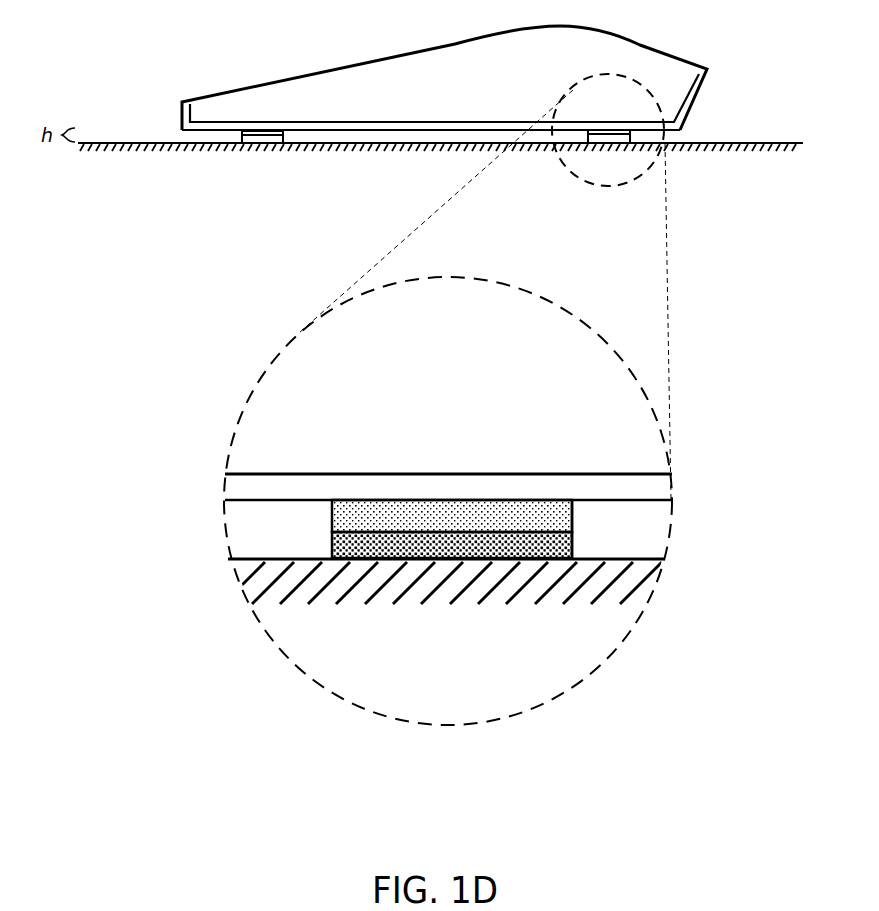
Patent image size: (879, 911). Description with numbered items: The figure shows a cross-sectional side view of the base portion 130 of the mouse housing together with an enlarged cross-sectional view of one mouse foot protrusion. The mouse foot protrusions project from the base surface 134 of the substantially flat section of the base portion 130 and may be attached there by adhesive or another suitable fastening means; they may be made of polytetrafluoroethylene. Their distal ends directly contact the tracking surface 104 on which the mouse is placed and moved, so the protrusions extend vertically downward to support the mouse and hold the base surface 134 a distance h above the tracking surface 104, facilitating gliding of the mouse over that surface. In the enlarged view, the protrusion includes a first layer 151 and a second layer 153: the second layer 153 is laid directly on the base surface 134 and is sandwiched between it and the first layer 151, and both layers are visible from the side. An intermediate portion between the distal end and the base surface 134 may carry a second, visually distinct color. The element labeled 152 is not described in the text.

The tracking surface 104 is at (730, 143).
The base portion 130 is at (460, 124).
The base surface 134 is at (393, 131).
The first layer 151 is at (572, 550).
The gap between base and foot layer 152 is at (240, 134).
The second layer 153 is at (332, 508).